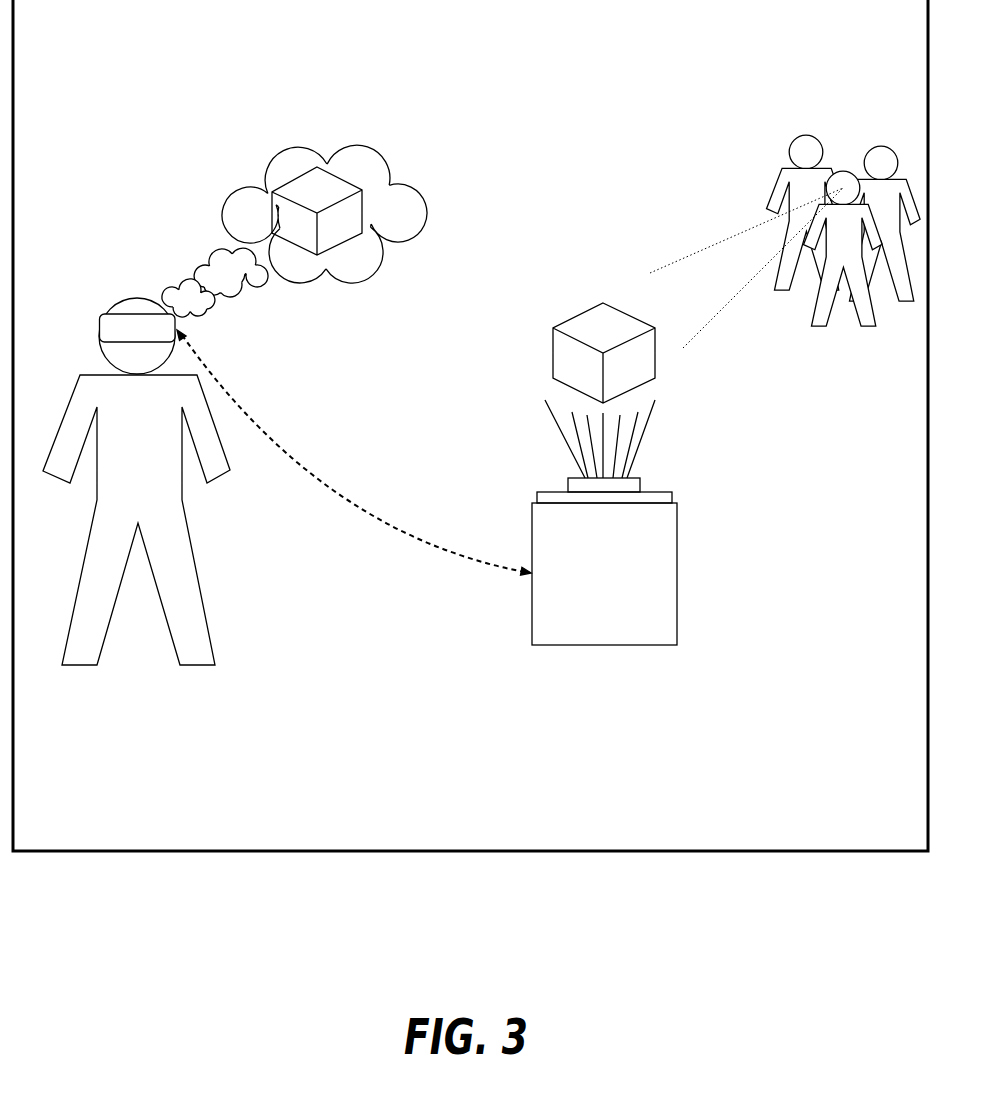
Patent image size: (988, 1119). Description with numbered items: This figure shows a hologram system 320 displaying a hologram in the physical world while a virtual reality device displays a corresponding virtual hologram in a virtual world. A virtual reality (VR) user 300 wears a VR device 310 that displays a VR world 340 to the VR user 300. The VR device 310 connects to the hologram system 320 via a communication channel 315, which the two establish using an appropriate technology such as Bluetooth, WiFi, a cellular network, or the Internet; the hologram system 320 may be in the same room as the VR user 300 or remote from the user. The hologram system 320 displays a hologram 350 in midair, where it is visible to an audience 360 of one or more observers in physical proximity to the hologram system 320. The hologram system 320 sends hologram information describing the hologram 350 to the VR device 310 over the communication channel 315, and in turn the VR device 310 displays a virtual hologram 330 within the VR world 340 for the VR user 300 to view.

The virtual reality (VR) user 300 is at (205, 481).
The VR device 310 is at (100, 267).
The communication channel 315 is at (354, 452).
The hologram system 320 is at (589, 610).
The virtual hologram 330 is at (232, 149).
The VR world 340 is at (337, 208).
The hologram 350 is at (560, 337).
The audience 360 is at (785, 209).